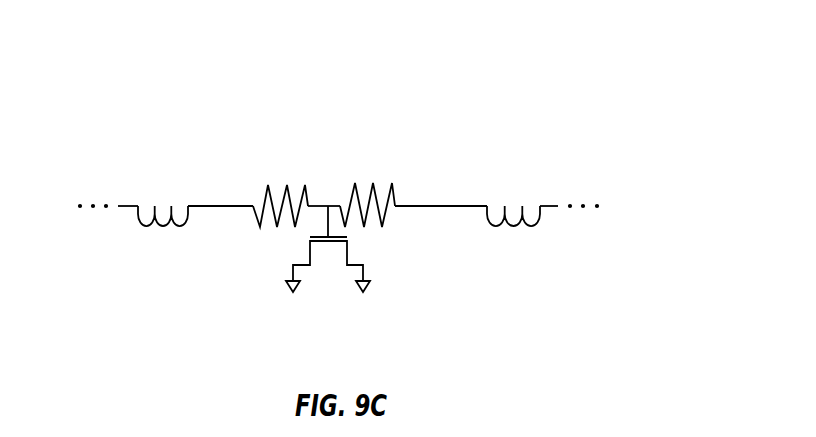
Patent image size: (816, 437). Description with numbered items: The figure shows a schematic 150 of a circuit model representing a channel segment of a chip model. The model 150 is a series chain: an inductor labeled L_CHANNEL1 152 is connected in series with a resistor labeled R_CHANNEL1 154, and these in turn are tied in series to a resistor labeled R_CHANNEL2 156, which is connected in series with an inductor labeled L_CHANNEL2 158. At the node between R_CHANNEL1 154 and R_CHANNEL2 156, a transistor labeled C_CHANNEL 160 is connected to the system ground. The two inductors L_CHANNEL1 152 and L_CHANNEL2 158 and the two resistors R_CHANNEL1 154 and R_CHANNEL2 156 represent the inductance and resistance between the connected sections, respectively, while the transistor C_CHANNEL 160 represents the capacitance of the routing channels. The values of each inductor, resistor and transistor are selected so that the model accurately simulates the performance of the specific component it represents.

The schematic of a circuit model of a channel model 150 is at (196, 72).
The inductor L_CHANNEL1 152 is at (121, 192).
The resistor R_CHANNEL1 154 is at (248, 181).
The resistor R_CHANNEL2 156 is at (333, 181).
The inductor L_CHANNEL2 158 is at (472, 191).
The transistor C_CHANNEL 160 is at (379, 286).